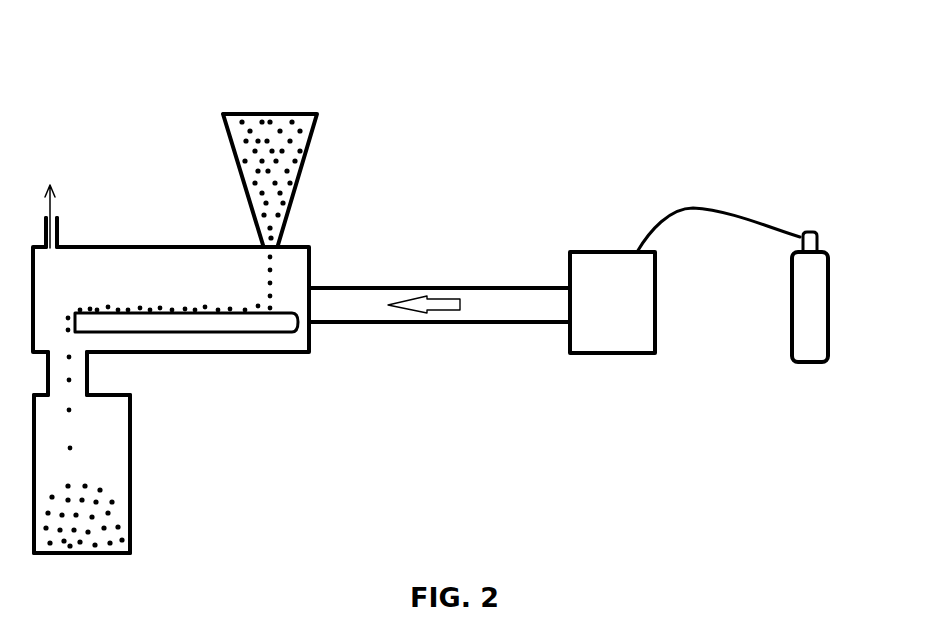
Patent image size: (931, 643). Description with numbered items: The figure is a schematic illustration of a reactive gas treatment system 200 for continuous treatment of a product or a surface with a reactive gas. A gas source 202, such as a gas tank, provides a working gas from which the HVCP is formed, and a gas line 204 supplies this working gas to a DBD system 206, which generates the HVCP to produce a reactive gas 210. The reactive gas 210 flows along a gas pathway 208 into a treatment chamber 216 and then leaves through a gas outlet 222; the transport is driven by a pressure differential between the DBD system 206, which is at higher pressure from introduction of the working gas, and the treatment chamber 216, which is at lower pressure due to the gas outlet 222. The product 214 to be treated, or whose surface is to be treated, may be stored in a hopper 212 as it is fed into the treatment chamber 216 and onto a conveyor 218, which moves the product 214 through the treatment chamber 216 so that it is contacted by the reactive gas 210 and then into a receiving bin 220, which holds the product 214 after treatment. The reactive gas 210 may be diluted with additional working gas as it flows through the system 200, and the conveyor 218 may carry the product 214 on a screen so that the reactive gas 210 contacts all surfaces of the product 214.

The reactive gas treatment system 200 is at (604, 118).
The gas source 202 is at (813, 352).
The gas line 204 is at (733, 210).
The DBD system 206 is at (612, 302).
The gas pathway 208 is at (390, 323).
The reactive gas 210 is at (507, 305).
The hopper 212 is at (315, 132).
The product 214 is at (292, 160).
The treatment chamber 216 is at (240, 355).
The conveyor 218 is at (291, 333).
The receiving bin 220 is at (132, 515).
The gas outlet 222 is at (177, 202).